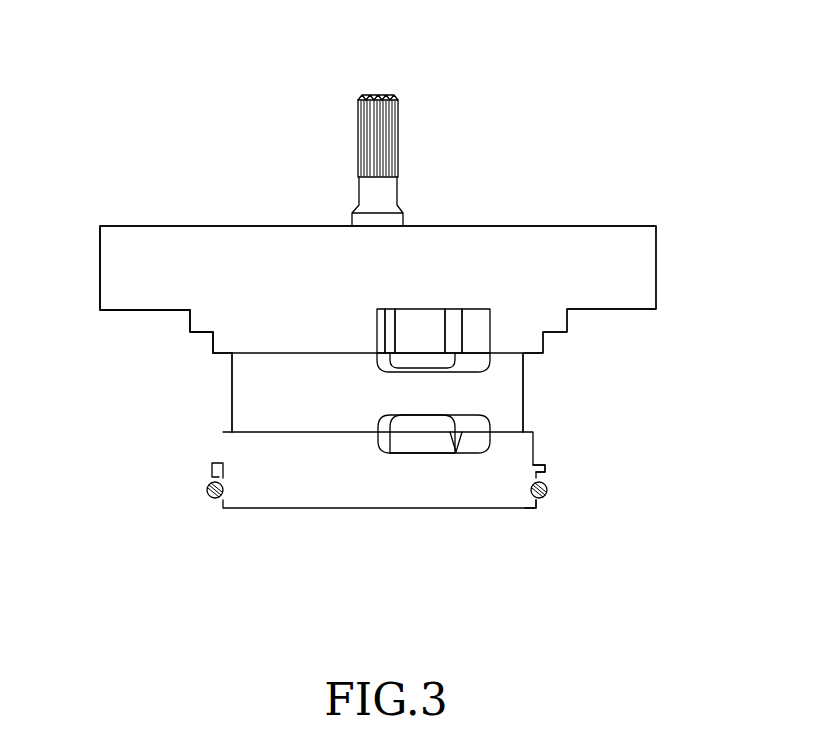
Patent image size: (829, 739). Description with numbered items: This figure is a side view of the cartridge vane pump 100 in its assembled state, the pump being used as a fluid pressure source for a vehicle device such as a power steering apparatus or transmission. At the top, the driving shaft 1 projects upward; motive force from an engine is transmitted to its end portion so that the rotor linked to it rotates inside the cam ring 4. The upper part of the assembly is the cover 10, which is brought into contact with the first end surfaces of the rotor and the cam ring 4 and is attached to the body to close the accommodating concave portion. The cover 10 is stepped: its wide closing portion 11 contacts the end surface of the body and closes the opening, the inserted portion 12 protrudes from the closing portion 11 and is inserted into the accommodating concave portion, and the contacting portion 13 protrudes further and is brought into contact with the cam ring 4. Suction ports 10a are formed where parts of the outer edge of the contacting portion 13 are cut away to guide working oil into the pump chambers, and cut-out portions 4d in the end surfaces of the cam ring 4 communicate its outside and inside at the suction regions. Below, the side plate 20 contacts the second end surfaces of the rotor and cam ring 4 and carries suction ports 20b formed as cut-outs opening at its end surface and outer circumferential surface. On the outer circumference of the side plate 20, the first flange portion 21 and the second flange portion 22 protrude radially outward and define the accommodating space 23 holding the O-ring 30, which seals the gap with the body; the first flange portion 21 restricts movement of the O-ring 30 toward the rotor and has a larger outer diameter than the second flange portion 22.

The cartridge vane pump 100 is at (636, 162).
The cover 10 is at (120, 224).
The closing portion 11 is at (144, 275).
The inserted portion 12 is at (198, 322).
The contacting portion 13 is at (238, 345).
The cam ring 4 is at (300, 372).
The driving shaft 1 is at (401, 95).
The suction port 10a is at (470, 330).
The cut-out portion 4d is at (430, 358).
The suction port 20b is at (467, 437).
The side plate 20 is at (248, 512).
The first flange portion 21 is at (546, 469).
The second flange portion 22 is at (532, 508).
The accommodating space 23 is at (556, 489).
The O-ring 30 is at (212, 497).